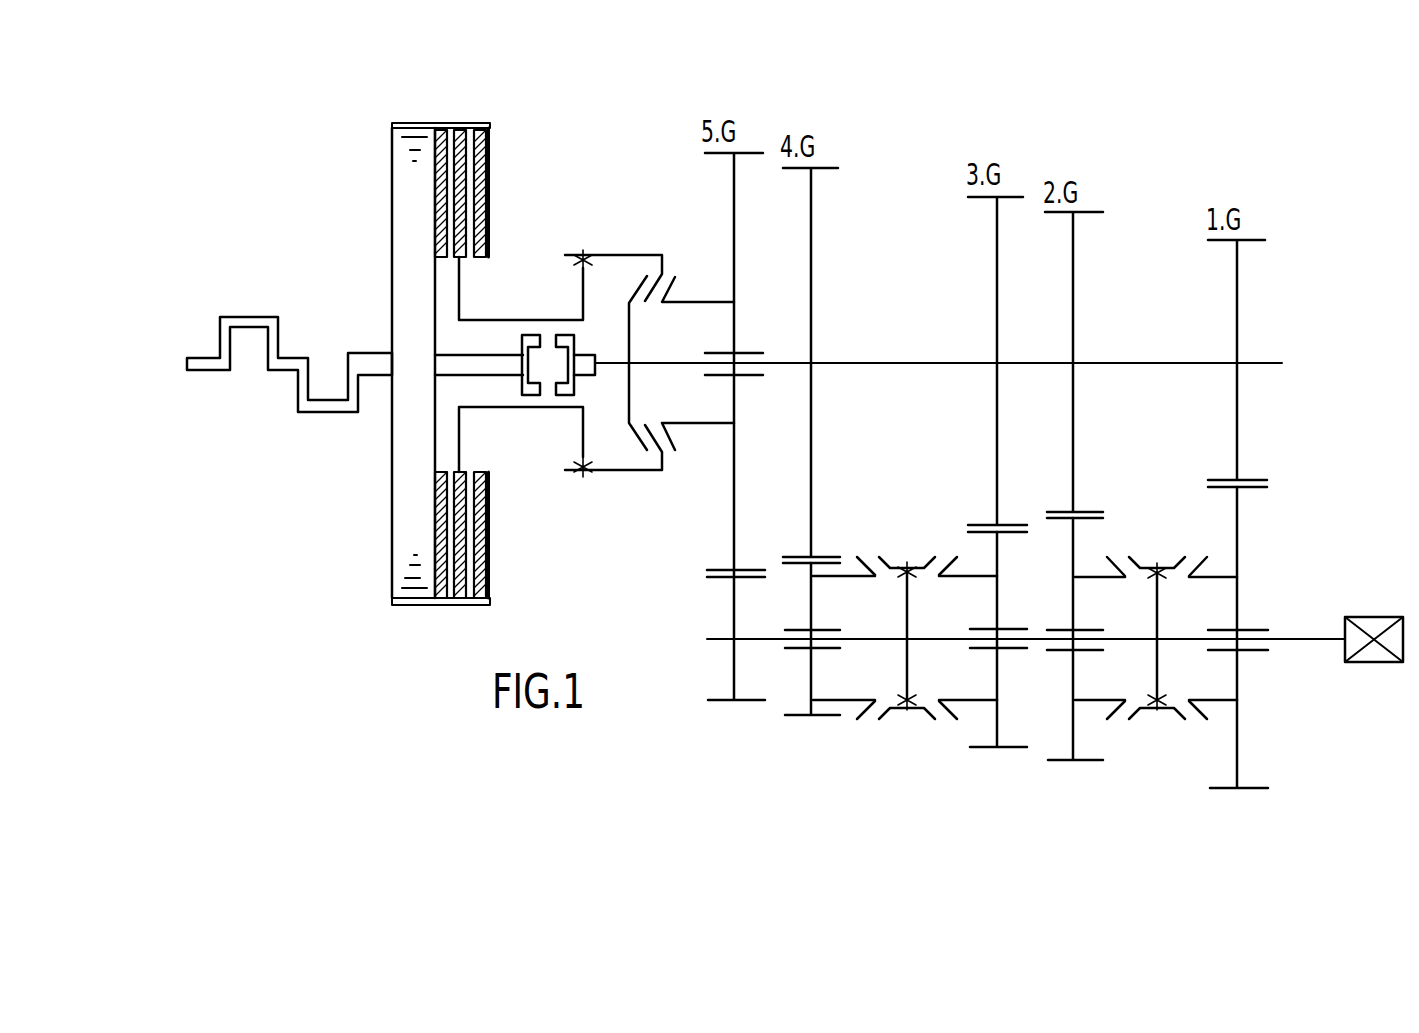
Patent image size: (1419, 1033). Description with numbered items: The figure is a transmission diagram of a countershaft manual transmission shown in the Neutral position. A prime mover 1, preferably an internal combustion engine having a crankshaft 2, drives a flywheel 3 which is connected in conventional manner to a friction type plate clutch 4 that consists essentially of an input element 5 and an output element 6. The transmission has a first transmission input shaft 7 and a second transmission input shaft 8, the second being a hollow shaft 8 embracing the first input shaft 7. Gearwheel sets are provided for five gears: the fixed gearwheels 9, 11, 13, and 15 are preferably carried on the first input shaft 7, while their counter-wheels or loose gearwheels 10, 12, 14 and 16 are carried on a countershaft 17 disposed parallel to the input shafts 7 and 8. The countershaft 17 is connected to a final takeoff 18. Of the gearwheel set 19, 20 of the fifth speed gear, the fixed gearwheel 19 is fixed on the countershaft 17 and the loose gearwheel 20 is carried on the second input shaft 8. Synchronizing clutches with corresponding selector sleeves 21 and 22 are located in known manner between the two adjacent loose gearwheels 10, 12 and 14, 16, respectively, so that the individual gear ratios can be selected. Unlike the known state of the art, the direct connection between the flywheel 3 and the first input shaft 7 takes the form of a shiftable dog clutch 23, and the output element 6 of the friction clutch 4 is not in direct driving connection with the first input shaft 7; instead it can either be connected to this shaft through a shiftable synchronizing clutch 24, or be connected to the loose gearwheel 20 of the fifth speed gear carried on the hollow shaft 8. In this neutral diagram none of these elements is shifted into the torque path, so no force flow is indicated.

The prime mover 1 is at (197, 318).
The crankshaft 2 is at (247, 322).
The flywheel 3 is at (403, 233).
The friction type plate clutch 4 is at (433, 117).
The input element 5 is at (482, 167).
The output element 6 is at (460, 206).
The first transmission input shaft 7 is at (899, 361).
The second transmission input shaft 8 is at (755, 352).
The fixed gearwheel 9 is at (1238, 287).
The loose gearwheel 10 is at (1242, 515).
The fixed gearwheel 11 is at (1077, 277).
The loose gearwheel 12 is at (1072, 605).
The fixed gearwheel 13 is at (995, 273).
The loose gearwheel 14 is at (999, 560).
The fixed gearwheel 15 is at (815, 228).
The loose gearwheel 16 is at (810, 597).
The countershaft 17 is at (930, 641).
The final takeoff 18 is at (1380, 616).
The fixed gearwheel 19 is at (732, 608).
The loose gearwheel 20 is at (735, 228).
The selector sleeve 21 is at (1155, 553).
The selector sleeve 22 is at (907, 562).
The shiftable dog clutch 23 is at (546, 414).
The shiftable synchronizing clutch 24 is at (660, 248).